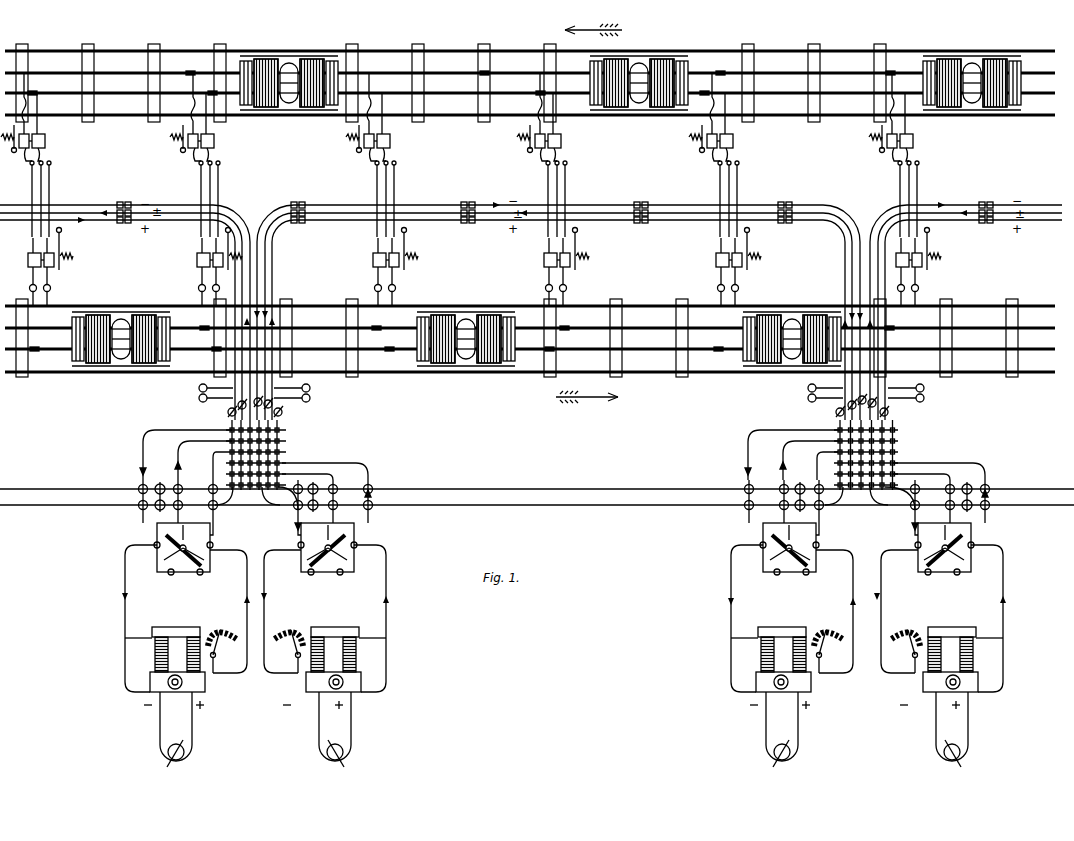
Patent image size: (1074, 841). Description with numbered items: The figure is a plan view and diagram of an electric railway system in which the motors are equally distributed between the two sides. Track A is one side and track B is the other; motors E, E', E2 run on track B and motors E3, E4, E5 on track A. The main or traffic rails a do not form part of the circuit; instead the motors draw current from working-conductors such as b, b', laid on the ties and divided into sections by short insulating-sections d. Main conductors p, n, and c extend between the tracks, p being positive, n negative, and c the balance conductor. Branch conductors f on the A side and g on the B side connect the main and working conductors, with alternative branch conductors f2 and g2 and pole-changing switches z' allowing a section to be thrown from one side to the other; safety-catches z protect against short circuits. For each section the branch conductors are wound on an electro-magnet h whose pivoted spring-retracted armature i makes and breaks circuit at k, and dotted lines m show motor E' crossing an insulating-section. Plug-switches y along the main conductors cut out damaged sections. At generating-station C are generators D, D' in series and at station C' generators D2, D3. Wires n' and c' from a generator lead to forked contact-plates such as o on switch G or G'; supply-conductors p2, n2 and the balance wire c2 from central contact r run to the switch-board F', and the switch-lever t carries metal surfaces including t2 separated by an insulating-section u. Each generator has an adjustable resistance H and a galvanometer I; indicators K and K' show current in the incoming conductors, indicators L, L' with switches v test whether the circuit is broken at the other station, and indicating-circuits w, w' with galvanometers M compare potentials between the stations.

The main or traffic rails a is at (536, 208).
The working-conductor b is at (539, 196).
The working-conductor b' is at (539, 225).
The insulating-sections d is at (548, 209).
The dotted-line motor position m is at (566, 82).
The motor E is at (289, 69).
The motor E' is at (639, 72).
The motor E2 is at (973, 55).
The motor E3 is at (115, 302).
The motor E4 is at (450, 300).
The motor E5 is at (790, 296).
The track B is at (628, 27).
The track A is at (612, 399).
The electro-magnet h is at (472, 189).
The armature i is at (558, 197).
The safety-catches z is at (472, 288).
The pole-changing switches z' is at (475, 196).
The branch conductor g is at (474, 182).
The branch conductor g2 is at (577, 180).
The branch conductor f is at (481, 230).
The branch conductor f2 is at (542, 230).
The contact k is at (756, 277).
The switch v is at (244, 267).
The main conductor n is at (535, 305).
The main conductor c is at (535, 311).
The main conductor p is at (535, 316).
The switches y is at (555, 210).
The electrical indicator L is at (511, 391).
The electrical indicator L' is at (611, 391).
The galvanometer K is at (572, 406).
The switch K' is at (526, 412).
The switchboard F' is at (570, 455).
The indicating-circuit wire w is at (537, 481).
The indicating-circuit wire w' is at (537, 513).
The galvanometer M is at (569, 481).
The negative supply-conductor n2 is at (530, 480).
The compensating or balance wire c2 is at (565, 459).
The positive supply-conductor p2 is at (600, 486).
The generating-station C is at (247, 506).
The generating-station C' is at (856, 506).
The generator D is at (186, 623).
The generator D' is at (325, 623).
The generator D2 is at (792, 623).
The generator D3 is at (942, 623).
The switch G is at (485, 587).
The switch G' is at (638, 587).
The adjustable resistance H is at (562, 617).
The galvanometer I is at (559, 735).
The switch-lever t is at (563, 593).
The metal surface t2 is at (562, 518).
The central contact r is at (256, 518).
The insulating-section u is at (258, 536).
The forked contact-plate o is at (567, 560).
The wire n' is at (414, 590).
The wire c' is at (560, 582).
The wire p' is at (706, 598).